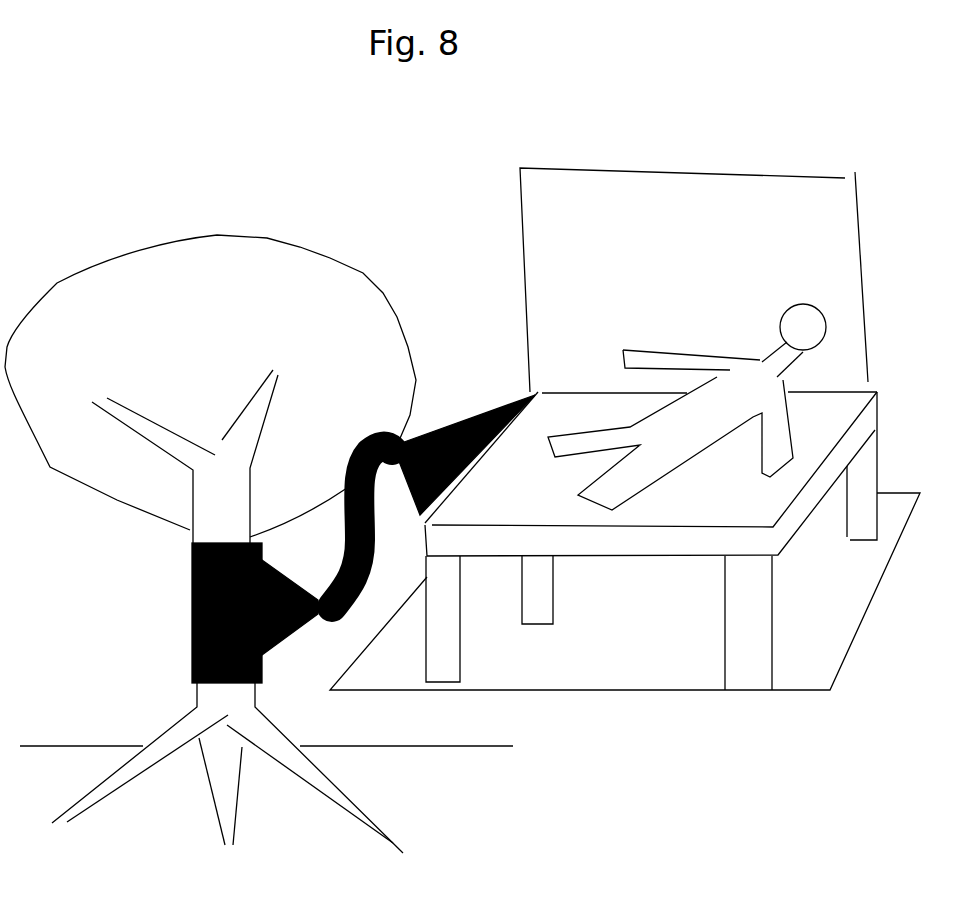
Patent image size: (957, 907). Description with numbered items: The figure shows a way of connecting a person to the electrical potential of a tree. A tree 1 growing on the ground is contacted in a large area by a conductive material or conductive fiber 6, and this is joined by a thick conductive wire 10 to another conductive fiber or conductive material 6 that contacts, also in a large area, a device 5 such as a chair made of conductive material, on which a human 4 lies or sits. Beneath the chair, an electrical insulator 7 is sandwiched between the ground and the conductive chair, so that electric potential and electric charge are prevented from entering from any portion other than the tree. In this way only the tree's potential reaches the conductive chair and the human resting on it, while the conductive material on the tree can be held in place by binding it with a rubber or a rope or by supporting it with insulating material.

The tree growing on the ground 1 is at (343, 257).
The human 4 is at (737, 355).
The device such as chair made of conductive material 5 is at (527, 333).
The conductive material or conductive fiber 6 is at (190, 607).
The electrical insulator 7 is at (537, 693).
The thick conductive wire 10 is at (340, 568).